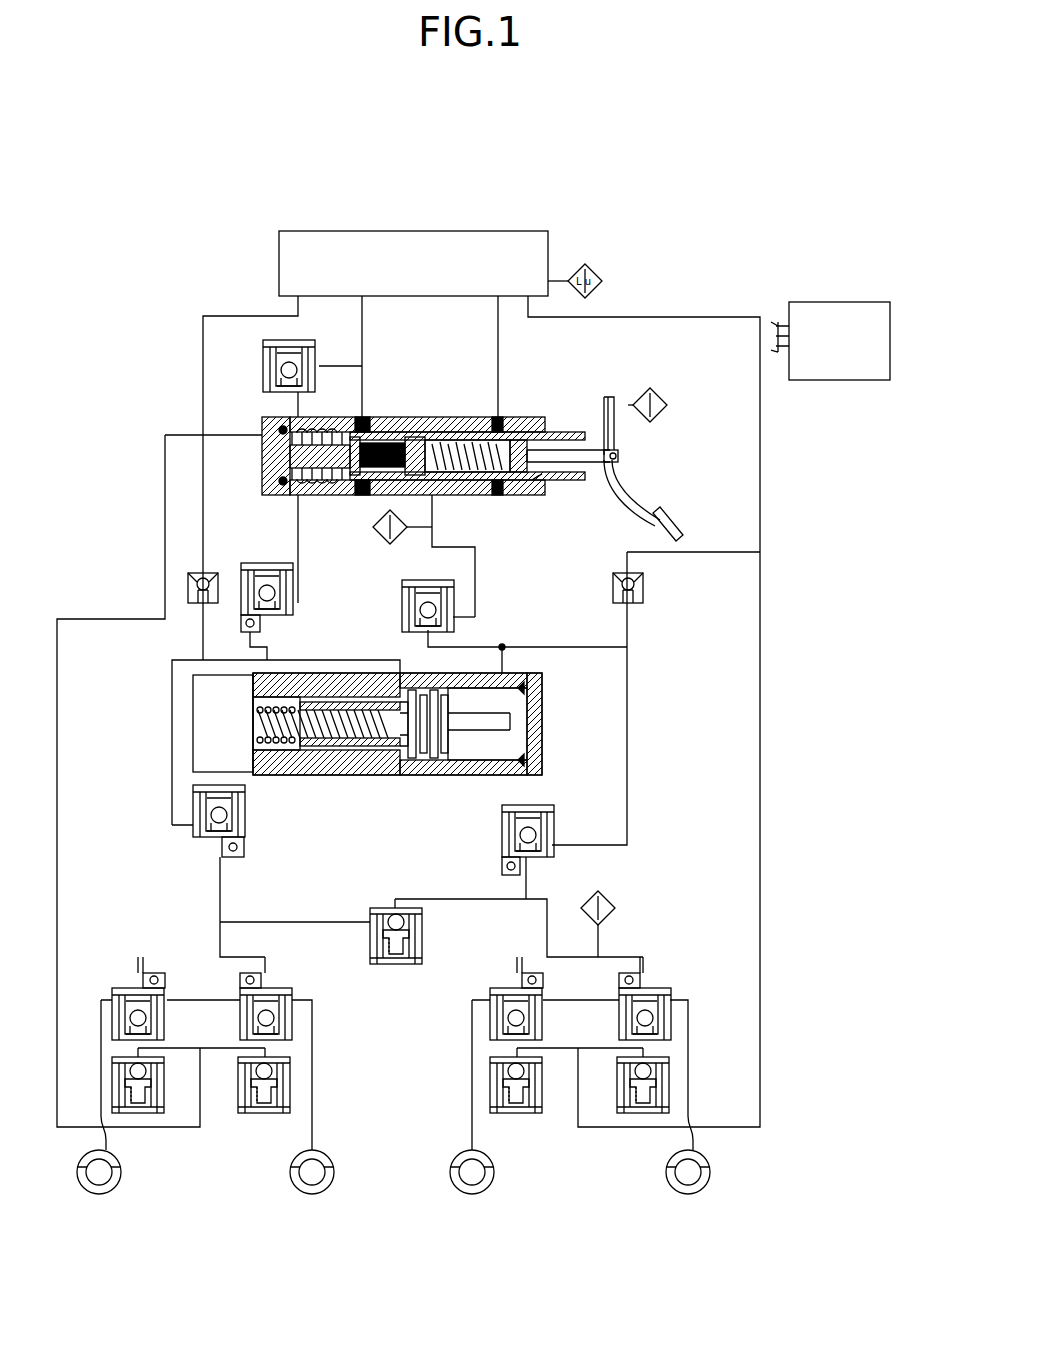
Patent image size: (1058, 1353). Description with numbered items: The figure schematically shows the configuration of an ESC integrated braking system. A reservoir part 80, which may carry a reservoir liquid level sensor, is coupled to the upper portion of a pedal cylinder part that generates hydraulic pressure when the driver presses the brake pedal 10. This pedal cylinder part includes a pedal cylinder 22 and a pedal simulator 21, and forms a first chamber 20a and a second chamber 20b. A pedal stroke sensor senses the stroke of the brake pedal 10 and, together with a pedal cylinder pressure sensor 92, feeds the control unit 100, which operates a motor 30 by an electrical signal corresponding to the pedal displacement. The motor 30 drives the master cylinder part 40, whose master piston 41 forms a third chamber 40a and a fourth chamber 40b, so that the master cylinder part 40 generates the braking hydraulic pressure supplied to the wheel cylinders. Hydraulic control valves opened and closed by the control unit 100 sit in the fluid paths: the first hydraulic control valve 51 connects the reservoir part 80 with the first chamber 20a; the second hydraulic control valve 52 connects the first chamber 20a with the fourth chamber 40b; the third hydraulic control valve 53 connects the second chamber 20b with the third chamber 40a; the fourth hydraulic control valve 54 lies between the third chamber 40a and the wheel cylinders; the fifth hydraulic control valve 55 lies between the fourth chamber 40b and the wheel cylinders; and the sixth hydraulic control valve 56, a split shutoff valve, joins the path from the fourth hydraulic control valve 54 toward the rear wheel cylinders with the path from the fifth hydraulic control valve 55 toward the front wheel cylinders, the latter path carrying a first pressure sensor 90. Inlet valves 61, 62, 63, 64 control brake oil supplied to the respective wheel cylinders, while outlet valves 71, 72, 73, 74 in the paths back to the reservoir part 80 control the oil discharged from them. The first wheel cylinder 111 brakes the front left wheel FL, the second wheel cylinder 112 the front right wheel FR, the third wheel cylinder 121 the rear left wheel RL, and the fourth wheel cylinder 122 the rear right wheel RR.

The brake pedal 10 is at (632, 479).
The first chamber 20a is at (335, 468).
The second chamber 20b is at (468, 475).
The pedal simulator 21 is at (395, 417).
The pedal cylinder 22 is at (440, 417).
The motor 30 is at (193, 724).
The master cylinder part 40 is at (397, 747).
The third chamber 40a is at (477, 745).
The fourth chamber 40b is at (405, 775).
The master piston 41 is at (448, 690).
The first hydraulic control valve 51 is at (263, 366).
The second hydraulic control valve 52 is at (292, 582).
The third hydraulic control valve 53 is at (453, 612).
The fourth hydraulic control valve 54 is at (552, 818).
The fifth hydraulic control valve 55 is at (193, 832).
The sixth hydraulic control valve 56 is at (378, 908).
The inlet valve 61 is at (120, 988).
The inlet valve 62 is at (282, 988).
The inlet valve 63 is at (500, 988).
The inlet valve 64 is at (662, 988).
The outlet valve 71 is at (150, 1113).
The outlet valve 72 is at (258, 1113).
The outlet valve 73 is at (526, 1113).
The outlet valve 74 is at (636, 1113).
The reservoir part 80 is at (412, 231).
The first pressure sensor 90 is at (610, 896).
The pedal cylinder pressure sensor 92 is at (400, 544).
The control unit 100 is at (838, 302).
The first wheel cylinder 111 is at (492, 1190).
The second wheel cylinder 112 is at (710, 1190).
The third wheel cylinder 121 is at (122, 1190).
The fourth wheel cylinder 122 is at (335, 1190).